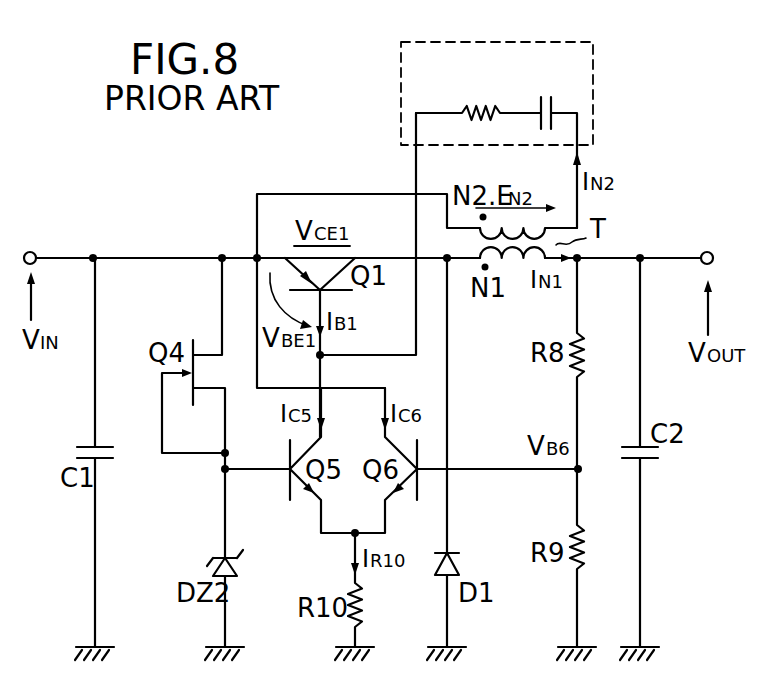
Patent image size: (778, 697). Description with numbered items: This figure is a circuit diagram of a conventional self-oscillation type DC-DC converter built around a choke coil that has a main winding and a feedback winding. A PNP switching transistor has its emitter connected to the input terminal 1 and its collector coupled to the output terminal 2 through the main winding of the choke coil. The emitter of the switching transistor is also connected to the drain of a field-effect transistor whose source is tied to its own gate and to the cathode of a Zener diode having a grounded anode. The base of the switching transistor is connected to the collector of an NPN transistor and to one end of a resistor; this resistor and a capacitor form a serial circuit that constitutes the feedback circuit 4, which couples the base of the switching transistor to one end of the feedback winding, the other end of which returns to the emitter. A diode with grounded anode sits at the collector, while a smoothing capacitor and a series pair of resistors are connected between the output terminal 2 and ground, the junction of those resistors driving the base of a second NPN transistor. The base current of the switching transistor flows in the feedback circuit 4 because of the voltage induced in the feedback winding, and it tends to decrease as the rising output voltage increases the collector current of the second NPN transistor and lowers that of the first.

The input terminal 1 is at (35, 253).
The output terminal 2 is at (705, 253).
The feedback circuit 4 is at (401, 42).